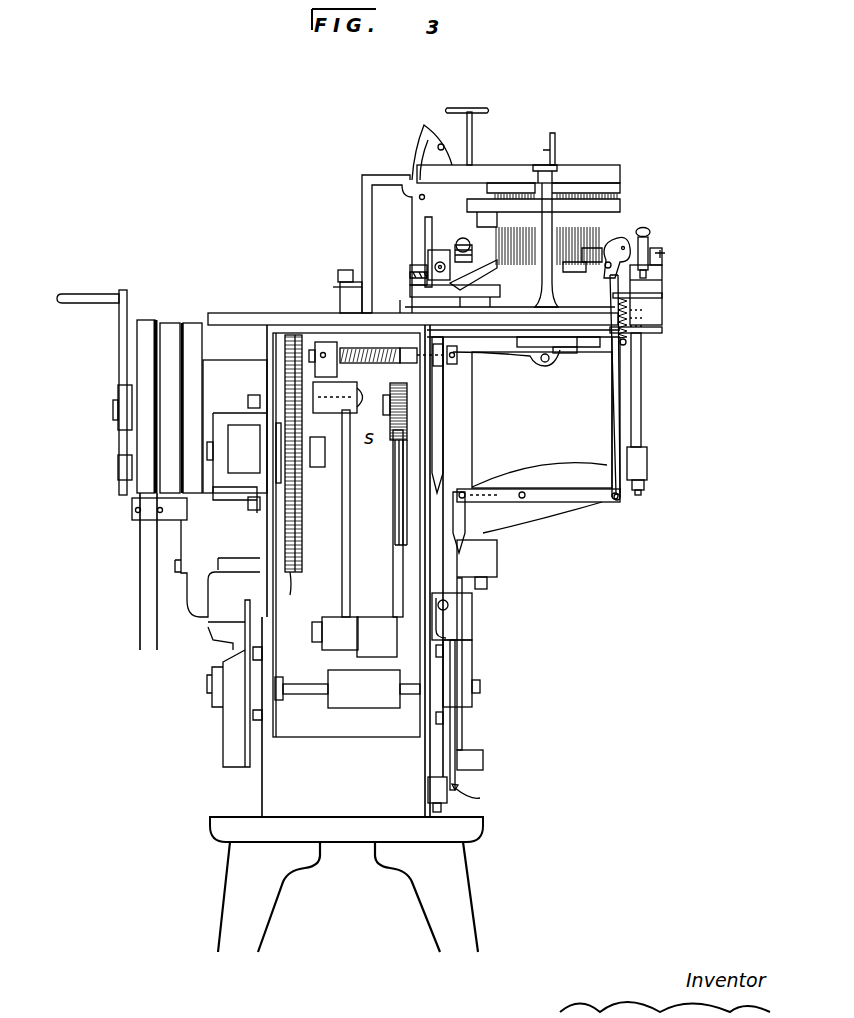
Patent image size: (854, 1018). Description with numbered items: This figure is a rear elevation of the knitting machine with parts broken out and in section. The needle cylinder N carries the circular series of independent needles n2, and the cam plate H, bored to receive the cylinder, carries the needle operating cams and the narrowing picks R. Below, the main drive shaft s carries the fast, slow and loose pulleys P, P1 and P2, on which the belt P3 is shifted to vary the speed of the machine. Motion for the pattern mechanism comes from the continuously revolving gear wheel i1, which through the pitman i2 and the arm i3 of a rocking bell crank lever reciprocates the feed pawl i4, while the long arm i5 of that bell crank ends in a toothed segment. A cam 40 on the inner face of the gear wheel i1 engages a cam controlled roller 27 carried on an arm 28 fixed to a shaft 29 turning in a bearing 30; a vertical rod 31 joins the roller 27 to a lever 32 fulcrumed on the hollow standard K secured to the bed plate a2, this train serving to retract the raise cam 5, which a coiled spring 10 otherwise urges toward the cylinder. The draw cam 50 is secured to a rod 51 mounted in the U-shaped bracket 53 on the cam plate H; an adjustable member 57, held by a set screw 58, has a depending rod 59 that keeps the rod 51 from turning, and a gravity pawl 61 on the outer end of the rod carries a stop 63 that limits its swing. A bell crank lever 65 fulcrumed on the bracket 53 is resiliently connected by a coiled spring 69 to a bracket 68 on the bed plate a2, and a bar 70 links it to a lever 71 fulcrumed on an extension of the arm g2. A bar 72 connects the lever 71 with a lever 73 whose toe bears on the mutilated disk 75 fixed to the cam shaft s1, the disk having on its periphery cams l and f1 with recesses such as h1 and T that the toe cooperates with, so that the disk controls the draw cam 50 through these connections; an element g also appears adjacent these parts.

The loose pulley P2 is at (133, 290).
The slow pulley P1 is at (165, 320).
The fast pulley P is at (193, 320).
The bed plate a2 is at (236, 313).
The main drive shaft s is at (113, 410).
The belt P3 is at (140, 560).
The cam controlled roller 27 is at (300, 340).
The arm 28 is at (277, 387).
The shaft 29 is at (365, 350).
The bearing 30 is at (357, 310).
The vertical rod 31 is at (320, 342).
The lever 32 is at (338, 276).
The hollow standard K is at (380, 200).
The narrowing picks R is at (490, 253).
The needle cylinder N is at (500, 318).
The needles n2 is at (533, 330).
The set screw 58 is at (585, 255).
The adjustable member 57 is at (600, 270).
The recess T is at (625, 242).
The gravity pawl 61 is at (648, 232).
The stop 63 is at (665, 255).
The raise cam 5 is at (662, 272).
The coiled spring 10 is at (662, 285).
The cam plate H is at (662, 298).
The bell crank lever 65 is at (645, 318).
The coiled spring 69 is at (654, 333).
The bracket 68 is at (616, 362).
The bar 70 is at (632, 405).
The draw cam 50 is at (535, 332).
The rod 59 is at (550, 332).
The rod 51 is at (577, 332).
The U-shaped bracket 53 is at (597, 332).
The arm g2 is at (568, 472).
The lever 71 is at (582, 502).
The bar 72 is at (465, 565).
The lever 73 is at (455, 608).
The mutilated disk 75 is at (458, 655).
The cam shaft s1 is at (480, 686).
The rod g is at (456, 700).
The cam l is at (462, 690).
The recess h1 is at (462, 740).
The cam f1 is at (480, 798).
The gear wheel i1 is at (290, 595).
The pitman i2 is at (345, 530).
The arm i3 is at (372, 640).
The feed pawl i4 is at (396, 455).
The long arm i5 is at (395, 515).
The cam 40 is at (302, 495).